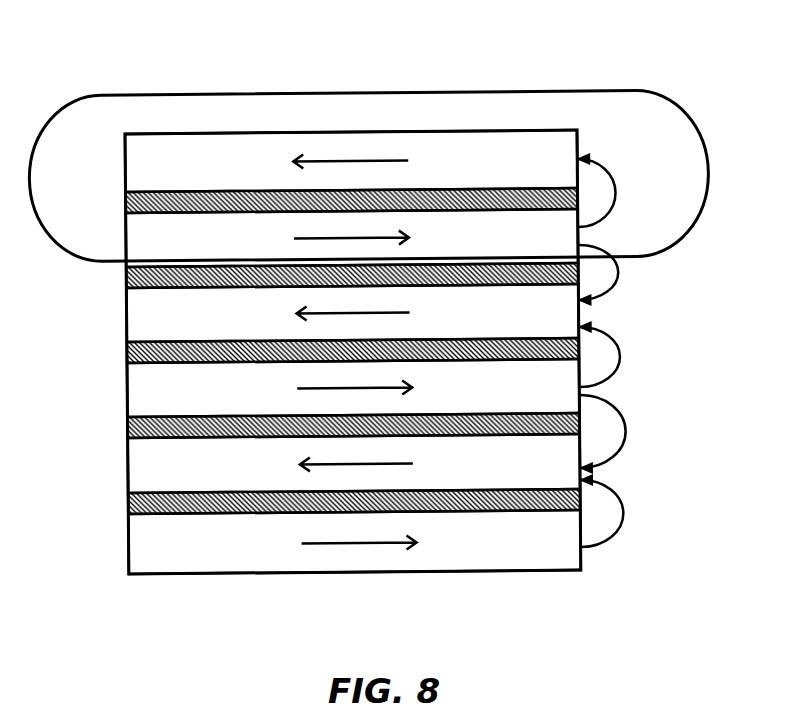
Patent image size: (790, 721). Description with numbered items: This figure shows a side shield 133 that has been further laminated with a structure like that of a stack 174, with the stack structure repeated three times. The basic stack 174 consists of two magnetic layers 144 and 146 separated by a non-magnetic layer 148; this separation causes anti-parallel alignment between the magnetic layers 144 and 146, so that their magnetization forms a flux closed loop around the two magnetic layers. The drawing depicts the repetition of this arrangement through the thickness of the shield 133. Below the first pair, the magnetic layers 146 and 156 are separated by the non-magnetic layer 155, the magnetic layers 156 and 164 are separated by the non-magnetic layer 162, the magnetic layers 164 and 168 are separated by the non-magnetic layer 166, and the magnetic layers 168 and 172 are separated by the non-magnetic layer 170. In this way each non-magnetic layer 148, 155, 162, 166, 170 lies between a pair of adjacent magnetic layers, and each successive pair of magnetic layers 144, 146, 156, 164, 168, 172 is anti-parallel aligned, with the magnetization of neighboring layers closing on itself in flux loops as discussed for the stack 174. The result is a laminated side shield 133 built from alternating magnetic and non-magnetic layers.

The side shield 133 is at (603, 76).
The magnetic layer 144 is at (556, 148).
The magnetic layer 146 is at (555, 244).
The non-magnetic layer 148 is at (577, 199).
The non-magnetic layer 155 is at (577, 277).
The magnetic layer 156 is at (562, 312).
The non-magnetic layer 162 is at (580, 349).
The magnetic layer 164 is at (560, 381).
The non-magnetic layer 166 is at (580, 422).
The magnetic layer 168 is at (567, 457).
The non-magnetic layer 170 is at (580, 499).
The magnetic layer 172 is at (567, 559).
The stack 174 is at (162, 95).